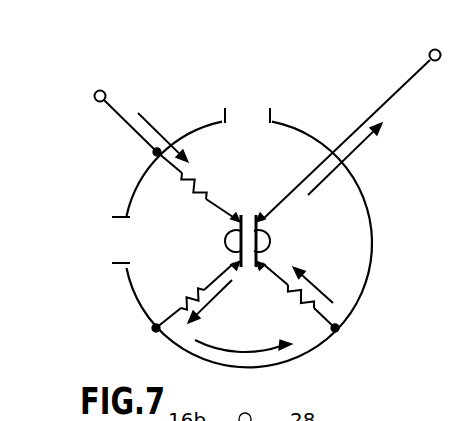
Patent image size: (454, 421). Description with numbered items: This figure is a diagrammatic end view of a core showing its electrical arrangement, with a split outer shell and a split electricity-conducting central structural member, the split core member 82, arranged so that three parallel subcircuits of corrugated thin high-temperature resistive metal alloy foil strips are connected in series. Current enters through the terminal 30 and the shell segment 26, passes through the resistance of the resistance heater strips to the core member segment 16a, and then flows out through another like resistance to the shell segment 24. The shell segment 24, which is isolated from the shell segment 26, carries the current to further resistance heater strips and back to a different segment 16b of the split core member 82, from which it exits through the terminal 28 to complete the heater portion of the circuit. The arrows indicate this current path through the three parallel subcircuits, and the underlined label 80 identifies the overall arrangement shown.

The core member segment 16a is at (227, 240).
The core member segment 16b is at (268, 242).
The shell segment 24 is at (310, 350).
The shell segment 26 is at (134, 190).
The terminal 28 is at (395, 97).
The terminal 30 is at (112, 115).
The circuit 80 is at (244, 280).
The split core member 82 is at (260, 208).